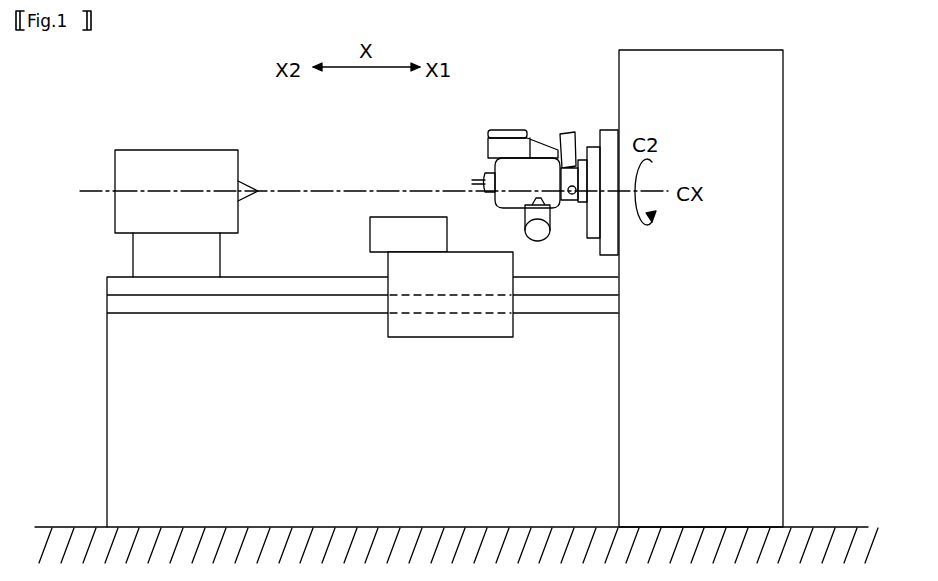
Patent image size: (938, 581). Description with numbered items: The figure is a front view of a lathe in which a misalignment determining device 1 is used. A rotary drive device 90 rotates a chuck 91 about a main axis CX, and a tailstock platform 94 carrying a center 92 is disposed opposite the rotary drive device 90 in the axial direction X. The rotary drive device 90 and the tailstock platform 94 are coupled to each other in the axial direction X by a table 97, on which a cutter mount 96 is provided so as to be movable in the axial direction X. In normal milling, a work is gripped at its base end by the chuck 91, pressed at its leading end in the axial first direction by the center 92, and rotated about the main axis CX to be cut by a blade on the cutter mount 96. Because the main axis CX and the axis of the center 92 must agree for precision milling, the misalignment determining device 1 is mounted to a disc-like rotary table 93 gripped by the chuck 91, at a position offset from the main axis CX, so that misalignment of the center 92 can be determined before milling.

The misalignment determining device 1 is at (510, 130).
The rotary drive device 90 is at (772, 313).
The chuck 91 is at (608, 132).
The rotary table 93 is at (590, 218).
The center 92 is at (249, 187).
The tailstock platform 94 is at (161, 160).
The cutter mount 96 is at (443, 338).
The table 97 is at (107, 432).